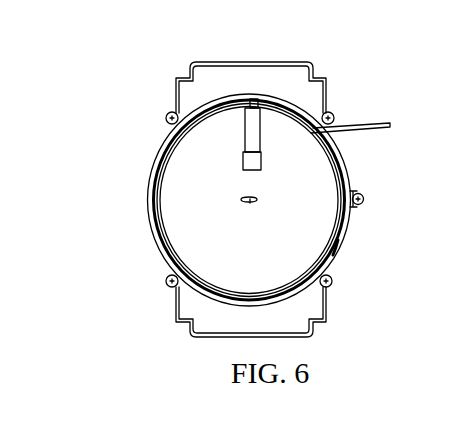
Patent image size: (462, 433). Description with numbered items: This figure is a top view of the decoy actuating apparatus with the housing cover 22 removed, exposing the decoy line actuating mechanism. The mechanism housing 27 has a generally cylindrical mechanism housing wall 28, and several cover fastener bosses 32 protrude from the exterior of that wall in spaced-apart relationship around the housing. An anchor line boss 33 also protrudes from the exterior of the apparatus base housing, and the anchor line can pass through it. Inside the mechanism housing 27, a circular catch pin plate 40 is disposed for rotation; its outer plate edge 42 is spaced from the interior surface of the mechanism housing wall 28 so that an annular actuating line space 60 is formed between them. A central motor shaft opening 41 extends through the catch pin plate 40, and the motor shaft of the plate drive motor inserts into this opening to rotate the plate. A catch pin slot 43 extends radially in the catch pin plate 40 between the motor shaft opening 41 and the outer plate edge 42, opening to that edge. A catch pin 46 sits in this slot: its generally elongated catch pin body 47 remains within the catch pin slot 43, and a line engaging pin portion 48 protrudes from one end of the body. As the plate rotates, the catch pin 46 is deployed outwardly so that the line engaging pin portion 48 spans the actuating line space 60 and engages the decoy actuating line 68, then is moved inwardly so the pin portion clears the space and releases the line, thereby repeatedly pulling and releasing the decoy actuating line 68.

The housing cover 22 is at (229, 71).
The mechanism housing 27 is at (145, 165).
The catch pin plate 40 is at (146, 205).
The outer plate edge 42 is at (151, 232).
The mechanism housing wall 28 is at (166, 262).
The annular actuating line space 60 is at (348, 243).
The cover fastener bosses 32 is at (166, 120).
The anchor line boss 33 is at (356, 190).
The decoy actuating line 68 is at (373, 129).
The catch pin slot 43 is at (250, 140).
The line engaging pin portion 48 is at (263, 98).
The catch pin body 47 is at (255, 130).
The catch pin 46 is at (268, 142).
The central motor shaft opening 41 is at (250, 203).